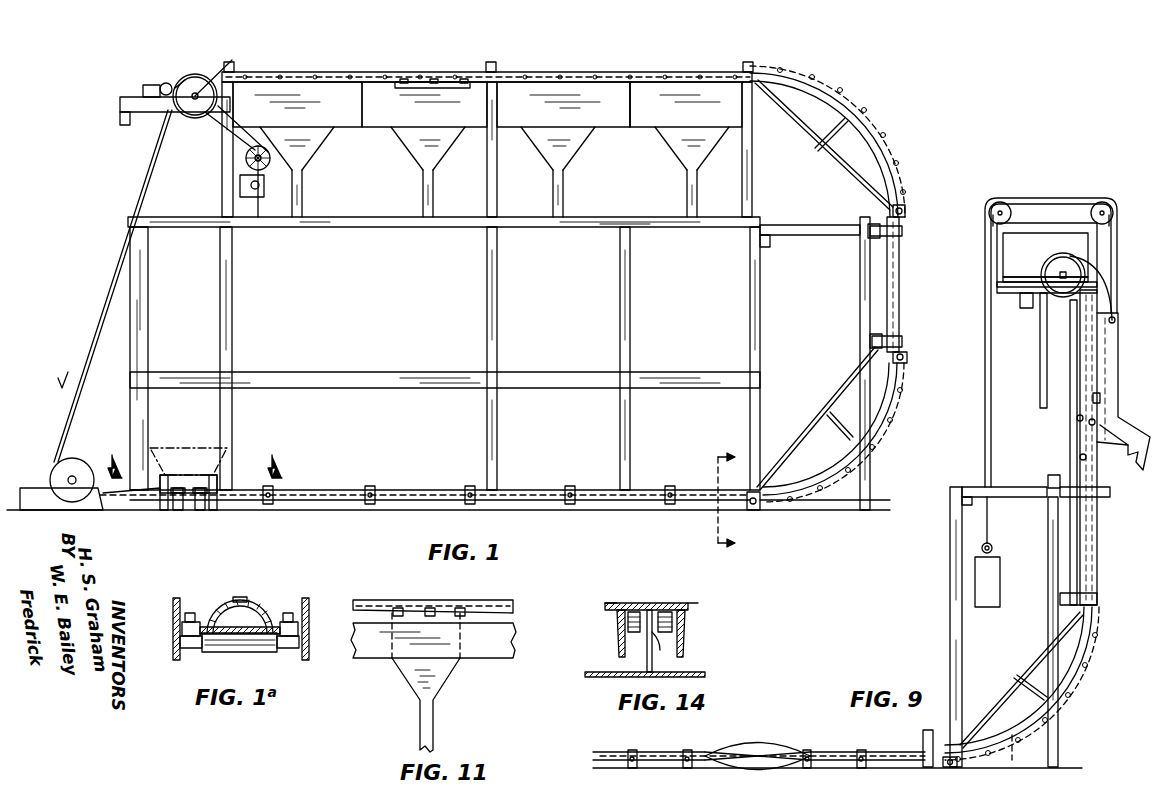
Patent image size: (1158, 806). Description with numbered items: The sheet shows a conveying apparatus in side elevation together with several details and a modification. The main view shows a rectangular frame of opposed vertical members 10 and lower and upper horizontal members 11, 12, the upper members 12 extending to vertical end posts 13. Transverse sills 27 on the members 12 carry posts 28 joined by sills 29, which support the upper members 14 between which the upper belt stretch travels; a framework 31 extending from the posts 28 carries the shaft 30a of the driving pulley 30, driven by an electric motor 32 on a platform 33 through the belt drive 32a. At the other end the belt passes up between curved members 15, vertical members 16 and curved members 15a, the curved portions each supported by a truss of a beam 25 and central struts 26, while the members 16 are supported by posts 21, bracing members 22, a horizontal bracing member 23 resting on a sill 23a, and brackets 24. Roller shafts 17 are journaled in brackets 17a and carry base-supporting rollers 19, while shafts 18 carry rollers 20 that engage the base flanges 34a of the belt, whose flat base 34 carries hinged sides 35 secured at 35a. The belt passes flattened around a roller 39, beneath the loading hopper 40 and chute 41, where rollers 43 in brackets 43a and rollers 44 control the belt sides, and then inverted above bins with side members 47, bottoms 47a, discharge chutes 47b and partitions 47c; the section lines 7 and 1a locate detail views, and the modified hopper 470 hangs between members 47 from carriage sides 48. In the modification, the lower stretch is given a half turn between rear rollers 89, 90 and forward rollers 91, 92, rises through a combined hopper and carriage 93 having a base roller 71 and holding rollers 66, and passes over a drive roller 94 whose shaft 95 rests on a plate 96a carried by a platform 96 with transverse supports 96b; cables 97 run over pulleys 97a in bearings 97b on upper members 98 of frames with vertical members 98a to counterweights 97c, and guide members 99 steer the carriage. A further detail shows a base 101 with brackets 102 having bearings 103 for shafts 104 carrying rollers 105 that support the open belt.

In FIG. 1, the vertical members 10 is at (631, 335).
In FIG. 9, the vertical members 10 is at (950, 575).
In FIG. 1, the horizontal members 11 is at (524, 380).
In FIG. 1, the upper horizontal members 12 is at (526, 227).
In FIG. 1, the vertical end posts 13 is at (150, 368).
In FIG. 1, the upper members 14 is at (372, 72).
In FIG. 11, the upper members 14 is at (378, 602).
In FIG. 1, the curved supporting members 15 is at (890, 430).
In FIG. 1, the upper curved supporting members 15a is at (868, 124).
In FIG. 9, the upper curved supporting members 15a is at (1095, 650).
In FIG. 1, the vertical side members 16 is at (900, 296).
In FIG. 9, the vertical side members 16 is at (900, 296).
In FIG. 1, the roller shafts 17 is at (566, 502).
In FIG. 9, the roller shafts 17 is at (926, 770).
In FIG. 1, the brackets 17a is at (375, 488).
In FIG. 1, the flange-roller shafts 18 is at (810, 88).
In FIG. 9, the flange-roller shafts 18 is at (1095, 632).
In FIG. 1, the base-supporting rollers 19 is at (310, 74).
In FIG. 9, the base-supporting rollers 19 is at (1080, 620).
In FIG. 1A, the base-supporting rollers 19 is at (265, 650).
In FIG. 9, the flange-engaging rollers 20 is at (1100, 424).
In FIG. 1, the vertical posts 21 is at (860, 306).
In FIG. 9, the vertical posts 21 is at (1048, 572).
In FIG. 1, the transverse bracing members 22 is at (868, 234).
In FIG. 9, the transverse bracing members 22 is at (1048, 482).
In FIG. 1, the upper horizontal bracing member 23 is at (794, 227).
In FIG. 9, the upper horizontal bracing member 23 is at (1030, 498).
In FIG. 1, the sill 23a is at (769, 247).
In FIG. 9, the sill 23a is at (962, 500).
In FIG. 1, the brackets 24 is at (903, 232).
In FIG. 9, the brackets 24 is at (1097, 494).
In FIG. 1, the truss beam 25 is at (840, 162).
In FIG. 9, the truss beam 25 is at (1000, 710).
In FIG. 1, the central struts 26 is at (836, 130).
In FIG. 9, the central struts 26 is at (1060, 690).
In FIG. 1, the transverse sills 27 is at (228, 216).
In FIG. 1, the vertical posts 28 is at (222, 170).
In FIG. 1, the transverse sills 29 is at (236, 67).
In FIG. 1, the driving pulley 30 is at (193, 78).
In FIG. 1, the pulley shaft 30a is at (218, 65).
In FIG. 1, the framework 31 is at (152, 110).
In FIG. 1, the electric motor 32 is at (262, 180).
In FIG. 1, the drive belt 32a is at (215, 142).
In FIG. 1, the platform 33 is at (255, 215).
In FIG. 1A, the belt base 34 is at (240, 620).
In FIG. 14, the belt base 34 is at (652, 606).
In FIG. 9, the base flanges 34a is at (600, 760).
In FIG. 1A, the belt sides 35 is at (225, 602).
In FIG. 14, the belt sides 35 is at (618, 640).
In FIG. 14, the hinge connection 35a is at (617, 607).
In FIG. 1, the roller 39 is at (66, 478).
In FIG. 1, the loading hopper 40 is at (188, 460).
In FIG. 1, the chute 41 is at (188, 492).
In FIG. 1, the rollers 43 is at (176, 507).
In FIG. 1, the brackets 43a is at (201, 511).
In FIG. 1, the rollers 44 is at (128, 512).
In FIG. 1, the bin side members 47 is at (598, 105).
In FIG. 11, the bin side members 47 is at (433, 635).
In FIG. 1, the bin bottom 47a is at (392, 137).
In FIG. 1, the discharge chutes 47b is at (292, 150).
In FIG. 1, the transverse partitions 47c is at (630, 112).
In FIG. 1, the carriage sides 48 is at (438, 86).
In FIG. 11, the carriage sides 48 is at (448, 610).
In FIG. 11, the hopper 470 is at (445, 672).
In FIG. 9, the holding rollers 66 is at (1100, 398).
In FIG. 9, the base supporting roller 71 is at (1078, 418).
In FIG. 9, the rear roller 89 is at (688, 756).
In FIG. 9, the rear roller 90 is at (686, 764).
In FIG. 9, the forward roller 91 is at (806, 756).
In FIG. 9, the forward roller 92 is at (806, 764).
In FIG. 9, the combined hopper and carriage 93 is at (1115, 334).
In FIG. 9, the drive roller 94 is at (1108, 266).
In FIG. 9, the drive roller shaft 95 is at (1055, 280).
In FIG. 9, the platform 96 is at (1022, 302).
In FIG. 9, the plate 96a is at (1020, 278).
In FIG. 9, the transverse supports 96b is at (1046, 312).
In FIG. 9, the cables 97 is at (1112, 272).
In FIG. 9, the pulleys 97a is at (1000, 204).
In FIG. 9, the bearings 97b is at (992, 222).
In FIG. 9, the counterweights 97c is at (999, 575).
In FIG. 9, the upper frame members 98 is at (1035, 238).
In FIG. 9, the vertical frame members 98a is at (1030, 241).
In FIG. 9, the guide members 99 is at (1068, 452).
In FIG. 14, the supporting base 101 is at (700, 677).
In FIG. 14, the brackets 102 is at (647, 660).
In FIG. 14, the bearings 103 is at (672, 610).
In FIG. 14, the shafts 104 is at (660, 652).
In FIG. 14, the rollers 105 is at (627, 606).
In FIG. 1, the section line 7- 7 is at (193, 456).
In FIG. 1, the section line 1a- 1a is at (736, 497).